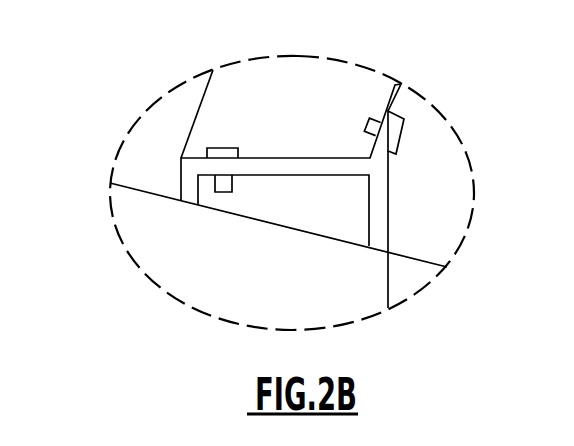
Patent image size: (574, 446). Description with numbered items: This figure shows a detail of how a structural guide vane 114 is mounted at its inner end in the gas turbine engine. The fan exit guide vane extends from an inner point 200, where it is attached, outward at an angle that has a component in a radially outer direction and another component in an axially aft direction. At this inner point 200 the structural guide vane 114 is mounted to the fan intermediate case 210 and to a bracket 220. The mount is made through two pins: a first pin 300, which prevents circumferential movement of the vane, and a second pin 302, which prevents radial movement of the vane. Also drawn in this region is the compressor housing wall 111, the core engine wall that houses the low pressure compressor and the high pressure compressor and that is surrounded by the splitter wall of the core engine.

The structural guide vane 114 is at (250, 92).
The inner point 200 is at (180, 158).
The bracket 220 is at (189, 175).
The first pin 300 is at (225, 149).
The second pin 302 is at (402, 149).
The compressor housing wall 111 is at (145, 191).
The fan intermediate case 210 is at (290, 284).